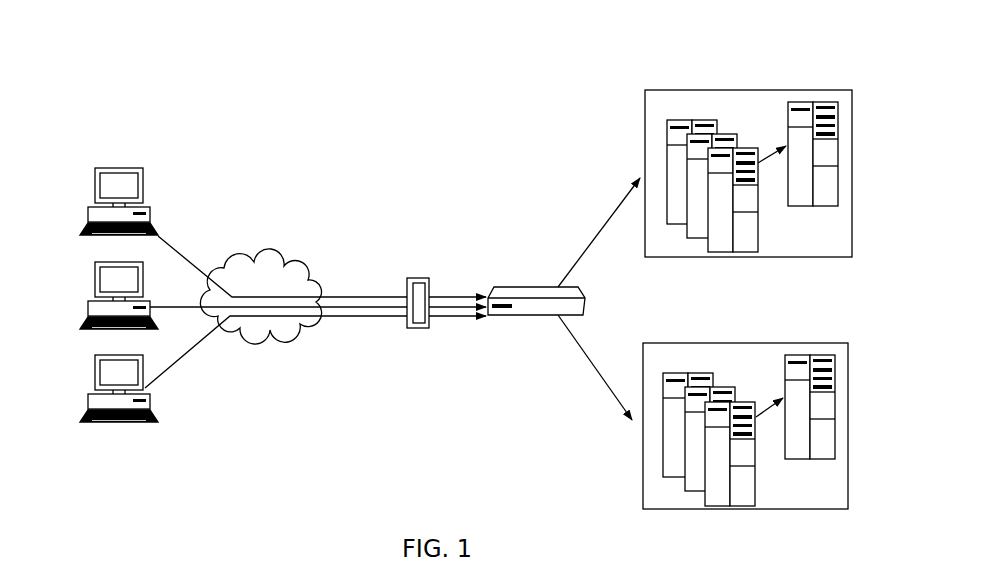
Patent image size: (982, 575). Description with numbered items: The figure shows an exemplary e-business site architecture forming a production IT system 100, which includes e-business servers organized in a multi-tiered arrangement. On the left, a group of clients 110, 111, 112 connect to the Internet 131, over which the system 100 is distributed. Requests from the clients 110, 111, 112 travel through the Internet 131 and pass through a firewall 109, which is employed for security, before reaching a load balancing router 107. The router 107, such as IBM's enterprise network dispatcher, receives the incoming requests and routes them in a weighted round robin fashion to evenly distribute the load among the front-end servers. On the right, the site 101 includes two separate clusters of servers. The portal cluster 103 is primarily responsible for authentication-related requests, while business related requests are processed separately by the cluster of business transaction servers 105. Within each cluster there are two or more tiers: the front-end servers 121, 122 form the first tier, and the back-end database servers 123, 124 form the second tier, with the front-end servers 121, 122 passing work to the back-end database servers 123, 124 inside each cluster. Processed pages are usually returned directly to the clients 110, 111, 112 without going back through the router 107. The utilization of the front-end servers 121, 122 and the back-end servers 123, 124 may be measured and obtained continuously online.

The production IT system 100 is at (250, 104).
The site 101 is at (825, 56).
The portal cluster 103 is at (750, 90).
The cluster of business transaction servers 105 is at (745, 343).
The load balancing router 107 is at (503, 287).
The firewall 109 is at (417, 278).
The client 110 is at (95, 188).
The client 111 is at (93, 272).
The client 112 is at (97, 358).
The front-end servers 121 is at (706, 120).
The front-end servers 122 is at (705, 375).
The back-end database server 123 is at (835, 204).
The back-end database server 124 is at (833, 456).
The Internet 131 is at (282, 272).